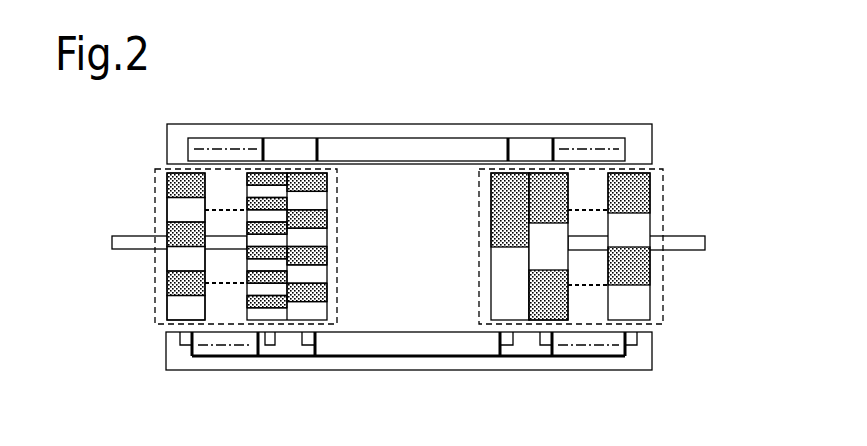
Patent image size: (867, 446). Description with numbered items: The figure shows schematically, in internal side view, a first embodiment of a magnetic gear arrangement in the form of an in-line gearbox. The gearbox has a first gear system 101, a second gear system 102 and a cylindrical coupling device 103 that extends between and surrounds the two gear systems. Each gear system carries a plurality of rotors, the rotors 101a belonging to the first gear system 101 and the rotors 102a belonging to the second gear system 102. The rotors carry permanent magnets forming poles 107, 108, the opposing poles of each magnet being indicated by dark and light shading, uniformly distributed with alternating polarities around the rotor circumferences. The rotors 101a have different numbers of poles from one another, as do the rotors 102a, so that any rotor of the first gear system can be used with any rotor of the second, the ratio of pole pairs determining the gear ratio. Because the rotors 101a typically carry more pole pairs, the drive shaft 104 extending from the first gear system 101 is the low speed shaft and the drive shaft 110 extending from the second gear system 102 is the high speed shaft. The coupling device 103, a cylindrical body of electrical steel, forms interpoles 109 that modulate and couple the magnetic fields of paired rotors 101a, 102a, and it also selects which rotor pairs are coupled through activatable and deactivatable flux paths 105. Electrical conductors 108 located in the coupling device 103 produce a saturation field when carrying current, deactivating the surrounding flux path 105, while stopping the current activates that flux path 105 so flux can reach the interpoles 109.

The first gear system 101 is at (151, 328).
The rotors of the first gear system 101a is at (201, 281).
The second gear system 102 is at (668, 169).
The rotors of the second gear system 102a is at (513, 302).
The coupling device 103 is at (409, 124).
The drive shaft 104 is at (132, 252).
The activatable and deactivatable flux paths 105 is at (194, 136).
The poles 107 is at (180, 211).
The poles 108 is at (168, 173).
The interpoles 109 is at (397, 359).
The drive shaft 110 is at (685, 247).